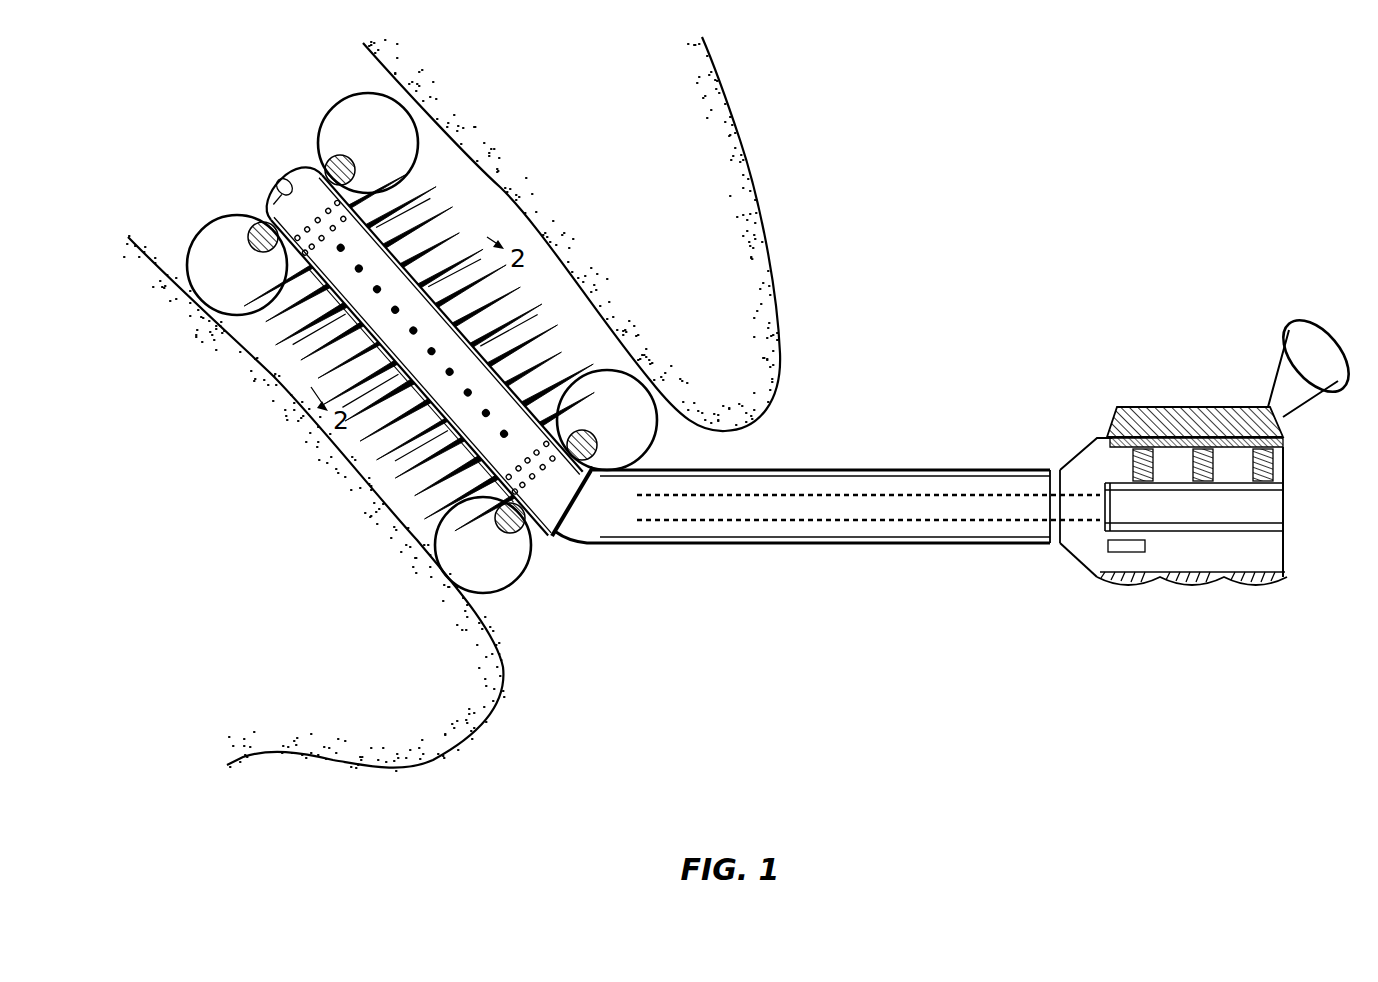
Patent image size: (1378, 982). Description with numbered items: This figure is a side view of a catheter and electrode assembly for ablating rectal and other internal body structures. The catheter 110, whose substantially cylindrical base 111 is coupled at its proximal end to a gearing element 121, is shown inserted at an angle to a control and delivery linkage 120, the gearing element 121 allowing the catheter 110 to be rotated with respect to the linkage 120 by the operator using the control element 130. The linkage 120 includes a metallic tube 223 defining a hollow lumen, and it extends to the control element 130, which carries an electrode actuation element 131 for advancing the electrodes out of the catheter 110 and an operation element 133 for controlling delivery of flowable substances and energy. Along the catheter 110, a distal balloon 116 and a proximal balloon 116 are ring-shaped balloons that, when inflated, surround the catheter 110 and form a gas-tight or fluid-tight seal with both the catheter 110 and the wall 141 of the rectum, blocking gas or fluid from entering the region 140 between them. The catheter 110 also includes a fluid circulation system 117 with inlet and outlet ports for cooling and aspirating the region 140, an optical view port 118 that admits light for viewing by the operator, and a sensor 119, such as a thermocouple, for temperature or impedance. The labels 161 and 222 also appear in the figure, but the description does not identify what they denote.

The catheter 110 is at (402, 402).
The base 111 is at (392, 477).
The balloon 116 is at (333, 113).
The fluid circulation system 117 is at (267, 222).
The optical view port 118 is at (273, 183).
The sensor 119 is at (318, 217).
The control and delivery linkage 120 is at (828, 519).
The gearing element 121 is at (560, 533).
The control element 130 is at (1192, 458).
The electrode actuation element 131 is at (1152, 407).
The operation element 133 is at (1147, 545).
The region 140 is at (503, 224).
The wall 141 is at (553, 300).
The sensor 161 is at (597, 440).
The shaft wall 222 is at (922, 469).
The metallic tube 223 is at (872, 521).